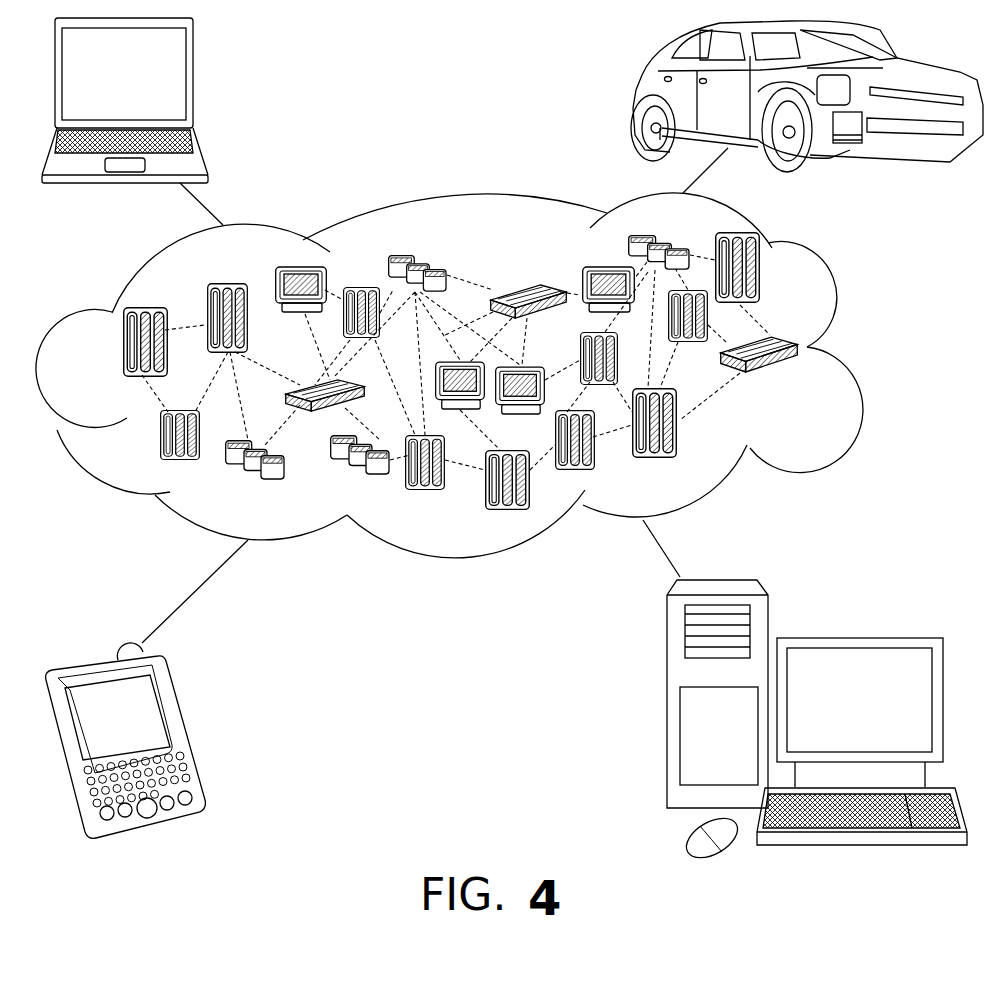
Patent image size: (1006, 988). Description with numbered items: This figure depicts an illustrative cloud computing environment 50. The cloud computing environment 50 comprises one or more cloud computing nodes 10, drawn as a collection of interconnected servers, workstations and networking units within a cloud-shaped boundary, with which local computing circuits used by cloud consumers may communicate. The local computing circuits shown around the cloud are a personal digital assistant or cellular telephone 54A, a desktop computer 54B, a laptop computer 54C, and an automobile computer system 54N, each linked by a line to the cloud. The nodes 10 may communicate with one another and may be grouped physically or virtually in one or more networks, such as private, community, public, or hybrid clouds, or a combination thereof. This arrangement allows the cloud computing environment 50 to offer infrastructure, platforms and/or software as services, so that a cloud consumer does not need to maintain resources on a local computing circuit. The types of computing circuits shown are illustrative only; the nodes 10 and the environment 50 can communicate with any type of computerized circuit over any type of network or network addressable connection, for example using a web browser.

The laptop computer 54C is at (197, 82).
The automobile computer system 54N is at (633, 100).
The personal digital assistant (PDA) or cellular telephone 54A is at (187, 731).
The desktop computer 54B is at (853, 637).
The cloud computing environment 50 is at (862, 358).
The cloud computing nodes 10 is at (805, 383).